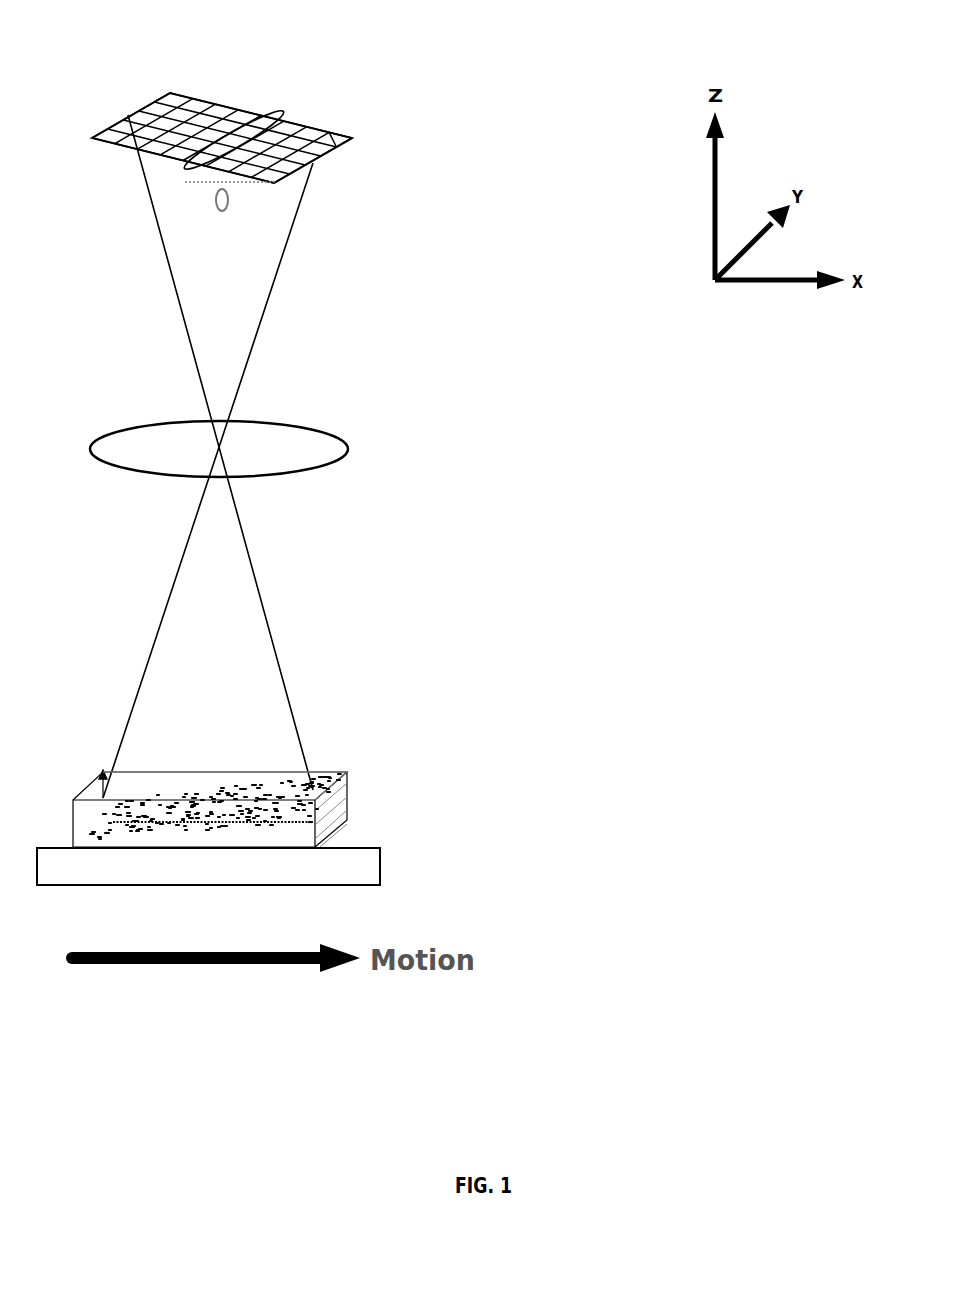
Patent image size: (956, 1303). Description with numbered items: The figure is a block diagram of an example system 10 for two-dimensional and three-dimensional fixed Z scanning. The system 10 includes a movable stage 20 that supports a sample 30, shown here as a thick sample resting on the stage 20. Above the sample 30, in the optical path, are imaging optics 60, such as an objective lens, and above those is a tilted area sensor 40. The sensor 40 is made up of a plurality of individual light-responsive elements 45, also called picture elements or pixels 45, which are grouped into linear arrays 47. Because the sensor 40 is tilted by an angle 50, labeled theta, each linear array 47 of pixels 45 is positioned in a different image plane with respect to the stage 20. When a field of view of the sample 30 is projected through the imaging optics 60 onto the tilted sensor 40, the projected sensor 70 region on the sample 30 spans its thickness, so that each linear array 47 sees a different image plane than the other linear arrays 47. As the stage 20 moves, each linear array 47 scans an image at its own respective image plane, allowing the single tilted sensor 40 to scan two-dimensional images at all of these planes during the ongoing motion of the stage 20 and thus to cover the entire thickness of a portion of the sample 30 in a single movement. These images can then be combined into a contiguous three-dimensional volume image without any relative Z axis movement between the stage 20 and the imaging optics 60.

The system 10 is at (627, 50).
The movable stage 20 is at (213, 885).
The sample 30 is at (332, 810).
The tilted area sensor 40 is at (250, 106).
The light-responsive element 45 is at (350, 147).
The linear array 47 is at (283, 112).
The angle 50 is at (235, 210).
The imaging optics 60 is at (356, 449).
The projected sensor 70 is at (263, 782).